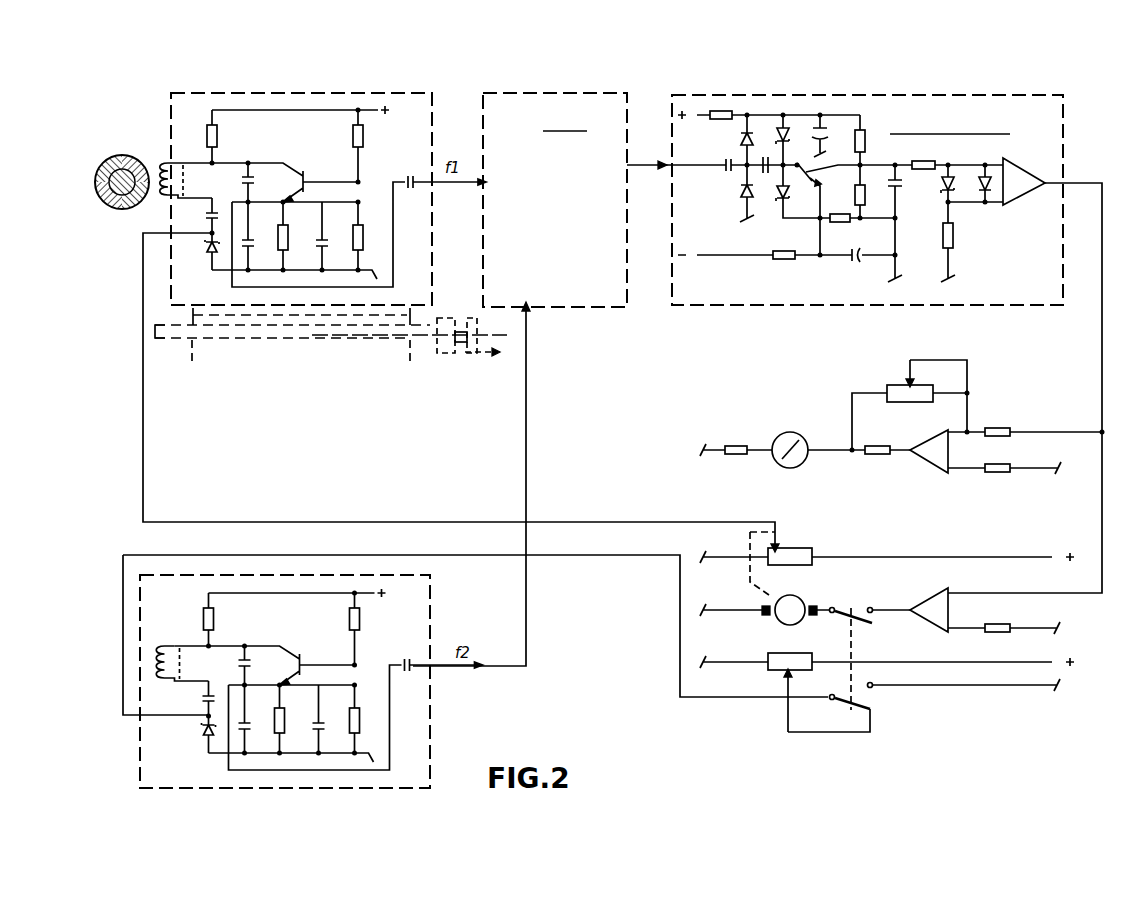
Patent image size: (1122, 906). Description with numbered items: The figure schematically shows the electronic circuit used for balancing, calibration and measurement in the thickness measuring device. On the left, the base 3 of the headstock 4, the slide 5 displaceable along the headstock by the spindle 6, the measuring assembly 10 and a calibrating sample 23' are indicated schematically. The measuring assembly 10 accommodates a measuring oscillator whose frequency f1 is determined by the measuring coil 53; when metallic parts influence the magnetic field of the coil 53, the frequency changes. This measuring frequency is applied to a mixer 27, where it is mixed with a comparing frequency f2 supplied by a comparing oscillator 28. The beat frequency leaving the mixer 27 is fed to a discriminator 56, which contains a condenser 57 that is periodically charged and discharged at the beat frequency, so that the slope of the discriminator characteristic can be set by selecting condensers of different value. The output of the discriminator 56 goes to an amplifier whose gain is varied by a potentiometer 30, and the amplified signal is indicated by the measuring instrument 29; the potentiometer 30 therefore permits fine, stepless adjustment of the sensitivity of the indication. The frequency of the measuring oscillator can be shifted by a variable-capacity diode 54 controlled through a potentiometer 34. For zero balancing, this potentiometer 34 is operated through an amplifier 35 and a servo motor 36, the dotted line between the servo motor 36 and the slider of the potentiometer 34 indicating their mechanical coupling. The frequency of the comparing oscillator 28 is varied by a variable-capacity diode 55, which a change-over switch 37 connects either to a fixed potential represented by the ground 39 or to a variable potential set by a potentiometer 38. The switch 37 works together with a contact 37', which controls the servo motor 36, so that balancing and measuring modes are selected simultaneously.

The base 3 is at (203, 355).
The headstock 4 is at (160, 332).
The slide 5 is at (193, 315).
The spindle 6 is at (480, 337).
The measuring assembly 10 is at (277, 181).
The calibrating sample 23' is at (108, 166).
The mixer 27 is at (528, 115).
The comparing oscillator 28 is at (275, 681).
The measuring instrument 29 is at (775, 447).
The potentiometer 30 is at (897, 388).
The potentiometer 34 is at (768, 565).
The amplifier 35 is at (937, 625).
The servo motor 36 is at (772, 622).
The change-over switch 37 is at (829, 745).
The contact 37' is at (822, 702).
The potentiometer 38 is at (768, 668).
The ground 39 is at (997, 687).
The measuring coil 53 is at (163, 163).
The variable-capacity diode 54 is at (206, 247).
The variable-capacity diode 55 is at (205, 730).
The discriminator 56 is at (893, 327).
The condenser 57 is at (767, 160).